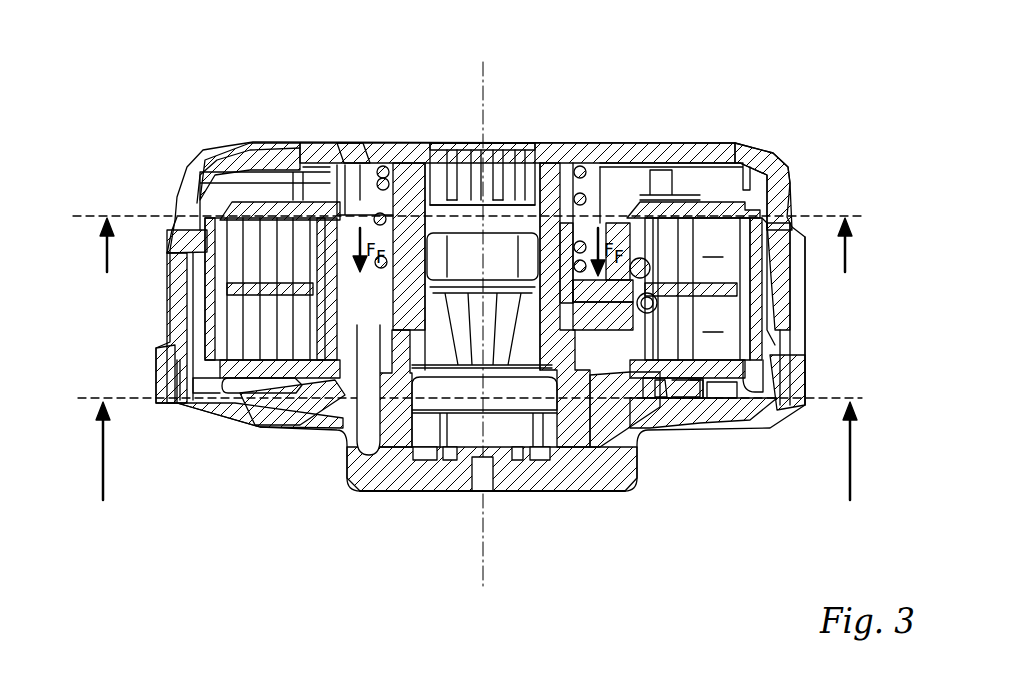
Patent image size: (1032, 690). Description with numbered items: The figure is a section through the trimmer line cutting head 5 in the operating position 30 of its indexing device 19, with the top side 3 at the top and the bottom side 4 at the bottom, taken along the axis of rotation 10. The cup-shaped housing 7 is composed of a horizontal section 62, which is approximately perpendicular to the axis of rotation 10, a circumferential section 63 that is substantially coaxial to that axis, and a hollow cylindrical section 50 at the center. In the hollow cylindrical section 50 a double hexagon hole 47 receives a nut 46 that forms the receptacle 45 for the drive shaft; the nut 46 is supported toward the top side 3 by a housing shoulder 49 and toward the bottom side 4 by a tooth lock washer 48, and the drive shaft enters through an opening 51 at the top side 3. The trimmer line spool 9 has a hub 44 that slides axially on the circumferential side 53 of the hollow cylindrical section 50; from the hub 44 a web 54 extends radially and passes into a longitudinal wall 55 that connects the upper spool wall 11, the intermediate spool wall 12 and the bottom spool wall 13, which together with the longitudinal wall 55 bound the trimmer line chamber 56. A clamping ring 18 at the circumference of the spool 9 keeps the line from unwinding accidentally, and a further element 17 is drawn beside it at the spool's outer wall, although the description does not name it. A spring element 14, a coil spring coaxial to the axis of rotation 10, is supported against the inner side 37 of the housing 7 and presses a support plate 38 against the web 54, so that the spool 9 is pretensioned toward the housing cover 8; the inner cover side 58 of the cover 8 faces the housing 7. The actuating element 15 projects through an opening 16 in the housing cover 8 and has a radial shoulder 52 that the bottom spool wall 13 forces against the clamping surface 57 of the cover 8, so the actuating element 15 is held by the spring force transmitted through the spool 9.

The top side 3 is at (562, 131).
The bottom side 4 is at (239, 434).
The trimmer line cutting head 5 is at (186, 98).
The housing 7 is at (778, 148).
The housing cover 8 is at (210, 420).
The trimmer line spool 9 is at (606, 436).
The axis of rotation 10 is at (484, 84).
The upper spool wall 11 is at (690, 202).
The intermediate spool wall 12 is at (700, 286).
The bottom spool wall 13 is at (766, 409).
The spring element 14 is at (586, 196).
The actuating element 15 is at (382, 492).
The opening 16 is at (314, 405).
The side wall 17 is at (220, 296).
The clamping ring 18 is at (213, 316).
The indexing device 19 is at (350, 165).
The operating position 30 is at (614, 535).
The inner side 37 is at (780, 178).
The support plate 38 is at (650, 266).
The hub 44 is at (430, 450).
The receptacle 45 is at (432, 221).
The nut 46 is at (460, 230).
The double hexagon hole 47 is at (460, 374).
The tooth lock washer 48 is at (510, 320).
The housing shoulder 49 is at (586, 246).
The hollow cylindrical section 50 is at (394, 167).
The opening 51 is at (462, 132).
The shoulder 52 is at (672, 415).
The circumferential side 53 is at (350, 428).
The web 54 is at (334, 410).
The longitudinal wall 55 is at (305, 268).
The trimmer line chamber 56 is at (703, 289).
The clamping surface 57 is at (660, 415).
The inner cover side 58 is at (712, 394).
The horizontal section 62 is at (298, 138).
The circumferential section 63 is at (171, 213).